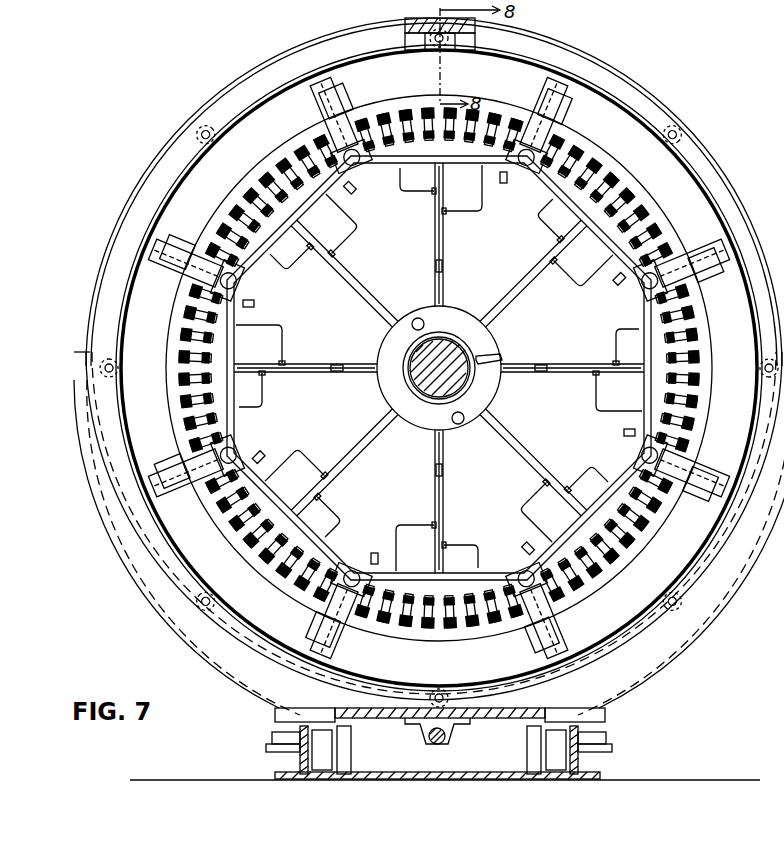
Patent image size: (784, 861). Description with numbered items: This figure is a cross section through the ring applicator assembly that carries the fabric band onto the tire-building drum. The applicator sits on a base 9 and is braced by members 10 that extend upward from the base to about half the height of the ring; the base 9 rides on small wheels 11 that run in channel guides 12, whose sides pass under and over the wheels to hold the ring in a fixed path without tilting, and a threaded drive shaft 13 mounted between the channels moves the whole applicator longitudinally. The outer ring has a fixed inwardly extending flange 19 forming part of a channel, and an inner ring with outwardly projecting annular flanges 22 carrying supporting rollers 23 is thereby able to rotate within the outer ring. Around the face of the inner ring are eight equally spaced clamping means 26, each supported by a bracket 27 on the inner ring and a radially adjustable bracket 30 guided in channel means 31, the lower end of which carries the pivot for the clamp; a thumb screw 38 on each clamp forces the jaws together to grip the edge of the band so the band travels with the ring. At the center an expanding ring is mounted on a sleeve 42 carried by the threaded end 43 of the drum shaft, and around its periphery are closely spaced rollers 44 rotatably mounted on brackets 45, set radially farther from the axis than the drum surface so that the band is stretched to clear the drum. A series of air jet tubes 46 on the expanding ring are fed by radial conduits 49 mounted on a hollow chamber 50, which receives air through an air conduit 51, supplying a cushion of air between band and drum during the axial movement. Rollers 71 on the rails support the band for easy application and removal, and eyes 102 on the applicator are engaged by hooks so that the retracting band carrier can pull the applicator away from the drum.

The base 9 is at (275, 714).
The bracing members 10 is at (314, 70).
The wheels 11 is at (346, 745).
The channel guides 12 is at (268, 746).
The threaded drive shaft 13 is at (446, 742).
The fixed inwardly extending flange 19 is at (230, 112).
The annular flanges 22 is at (470, 42).
The supporting rollers 23 is at (436, 46).
The clamping means 26 is at (345, 150).
The bracket 27 is at (135, 322).
The bracket 30 is at (356, 100).
The channel means 31 is at (348, 108).
The thumb screw 38 is at (345, 590).
The sleeve 42 is at (408, 362).
The threaded end 43 is at (418, 376).
The rollers 44 is at (592, 172).
The brackets 45 is at (600, 186).
The air jet tubes 46 is at (560, 182).
The radial conduits 49 is at (346, 268).
The hollow chamber 50 is at (488, 388).
The air conduit 51 is at (506, 354).
The rollers 71 is at (262, 280).
The eyes 102 is at (443, 266).